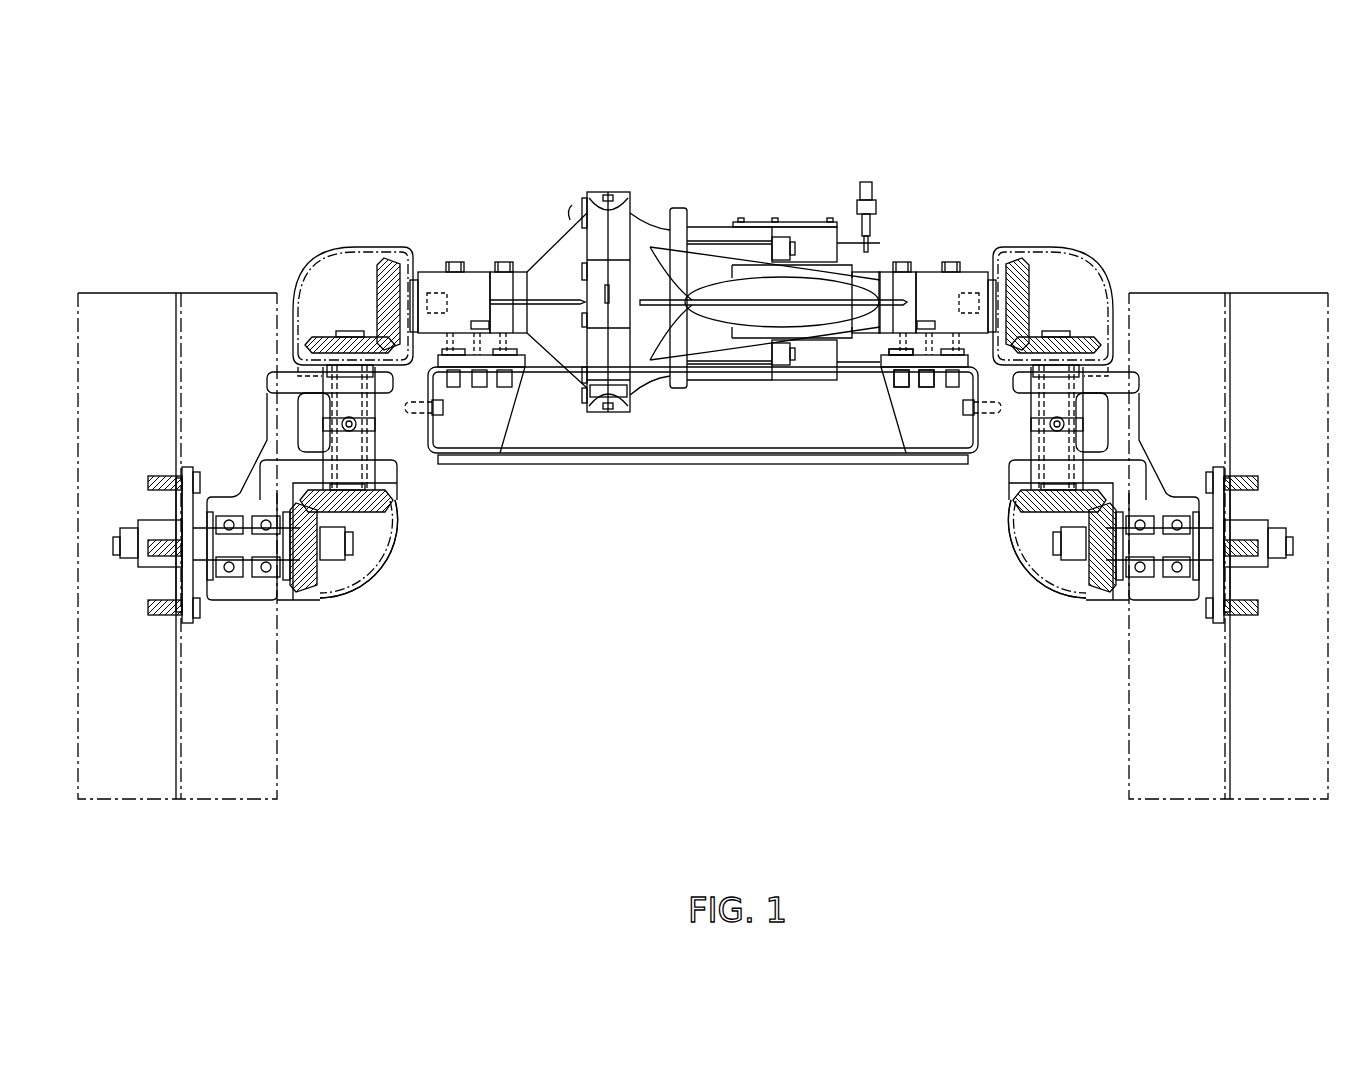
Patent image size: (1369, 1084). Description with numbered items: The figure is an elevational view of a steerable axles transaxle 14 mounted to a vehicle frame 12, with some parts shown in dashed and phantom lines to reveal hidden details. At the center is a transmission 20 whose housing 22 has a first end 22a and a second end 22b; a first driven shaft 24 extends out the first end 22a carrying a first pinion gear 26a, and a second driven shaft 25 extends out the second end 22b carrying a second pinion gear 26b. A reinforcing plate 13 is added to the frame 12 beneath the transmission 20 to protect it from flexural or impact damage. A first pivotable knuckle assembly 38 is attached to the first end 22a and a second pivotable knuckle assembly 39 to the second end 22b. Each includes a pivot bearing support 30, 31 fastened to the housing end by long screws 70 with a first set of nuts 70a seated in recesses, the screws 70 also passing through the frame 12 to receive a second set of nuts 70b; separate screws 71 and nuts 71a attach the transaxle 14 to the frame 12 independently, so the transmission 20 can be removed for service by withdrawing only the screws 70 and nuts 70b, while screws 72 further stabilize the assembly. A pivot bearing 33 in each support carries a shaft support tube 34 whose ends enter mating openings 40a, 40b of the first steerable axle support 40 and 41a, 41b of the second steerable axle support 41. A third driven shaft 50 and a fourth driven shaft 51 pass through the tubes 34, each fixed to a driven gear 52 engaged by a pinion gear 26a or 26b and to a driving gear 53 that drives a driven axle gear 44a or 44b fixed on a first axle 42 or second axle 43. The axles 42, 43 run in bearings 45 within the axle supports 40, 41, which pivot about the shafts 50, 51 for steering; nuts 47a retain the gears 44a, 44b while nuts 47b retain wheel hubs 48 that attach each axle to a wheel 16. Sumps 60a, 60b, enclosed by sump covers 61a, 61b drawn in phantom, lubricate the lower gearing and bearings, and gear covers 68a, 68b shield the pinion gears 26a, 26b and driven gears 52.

The vehicle frame 12 is at (508, 434).
The plate 13 is at (705, 465).
The transaxle 14 is at (155, 135).
The wheel 16 is at (176, 293).
The transmission 20 is at (652, 173).
The housing 22 is at (665, 291).
The first end 22a is at (523, 272).
The second end 22b is at (928, 272).
The first driven shaft 24 is at (434, 282).
The second driven shaft 25 is at (978, 285).
The first pinion gear 26a is at (385, 262).
The second pinion gear 26b is at (1021, 262).
The first pivot bearing support 30 is at (425, 398).
The second pivot bearing support 31 is at (1011, 398).
The pivot bearing 33 is at (317, 425).
The shaft support tube 34 is at (377, 445).
The first pivotable knuckle assembly 38 is at (435, 626).
The second pivotable knuckle assembly 39 is at (969, 626).
The first steerable axle support 40 is at (263, 440).
The mating opening 40a is at (327, 395).
The mating opening 40b is at (327, 450).
The second steerable axle support 41 is at (1143, 440).
The mating opening 41a is at (1080, 395).
The mating opening 41b is at (1080, 450).
The first axle 42 is at (245, 578).
The second axle 43 is at (1160, 578).
The driven axle gear 44a is at (310, 592).
The driven axle gear 44b is at (1096, 592).
The bearing 45 is at (225, 578).
The nut 47a is at (333, 567).
The nut 47b is at (132, 562).
The wheel hub 48 is at (157, 520).
The third driven shaft 50 is at (363, 408).
The fourth driven shaft 51 is at (1043, 408).
The driven gear 52 is at (322, 337).
The driving gear 53 is at (390, 510).
The sump 60a is at (362, 558).
The sump 60b is at (1044, 558).
The sump cover 61a is at (397, 543).
The sump cover 61b is at (1009, 543).
The gear cover 68a is at (323, 258).
The gear cover 68b is at (1083, 258).
The screw 70 is at (503, 262).
The first set of nuts 70a is at (889, 357).
The second set of nuts 70b is at (892, 375).
The screw 71 is at (481, 321).
The nut 71a is at (926, 387).
The screw 72 is at (443, 408).